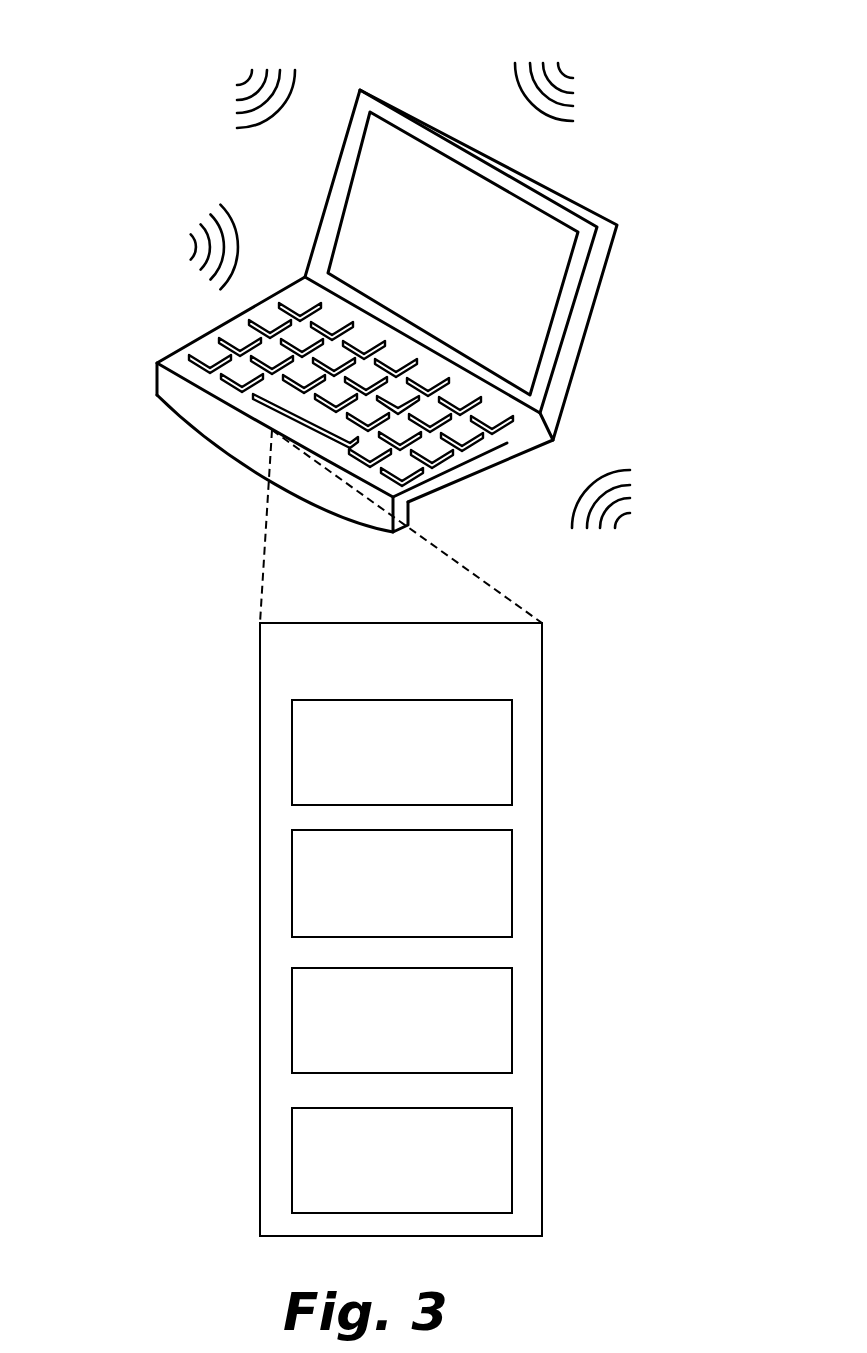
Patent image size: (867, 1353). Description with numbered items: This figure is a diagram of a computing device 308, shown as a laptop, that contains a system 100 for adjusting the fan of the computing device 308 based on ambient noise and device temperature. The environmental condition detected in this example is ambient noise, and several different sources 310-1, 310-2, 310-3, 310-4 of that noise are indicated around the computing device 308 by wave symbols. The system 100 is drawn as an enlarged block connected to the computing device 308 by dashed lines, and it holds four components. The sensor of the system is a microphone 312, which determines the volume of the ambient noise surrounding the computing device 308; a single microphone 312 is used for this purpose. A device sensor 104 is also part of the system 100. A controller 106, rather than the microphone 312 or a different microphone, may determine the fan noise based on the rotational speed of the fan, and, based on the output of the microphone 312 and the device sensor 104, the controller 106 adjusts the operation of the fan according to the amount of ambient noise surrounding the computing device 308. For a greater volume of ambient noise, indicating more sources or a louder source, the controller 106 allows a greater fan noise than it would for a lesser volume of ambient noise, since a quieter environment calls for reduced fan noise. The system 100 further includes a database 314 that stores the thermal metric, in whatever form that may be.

The computing device 308 is at (193, 408).
The source 310-1 is at (193, 250).
The source 310-2 is at (240, 98).
The source 310-3 is at (565, 74).
The source 310-4 is at (627, 502).
The system 100 is at (382, 687).
The microphone 312 is at (382, 780).
The device sensor 104 is at (382, 912).
The database 314 is at (382, 1047).
The controller 106 is at (382, 1187).